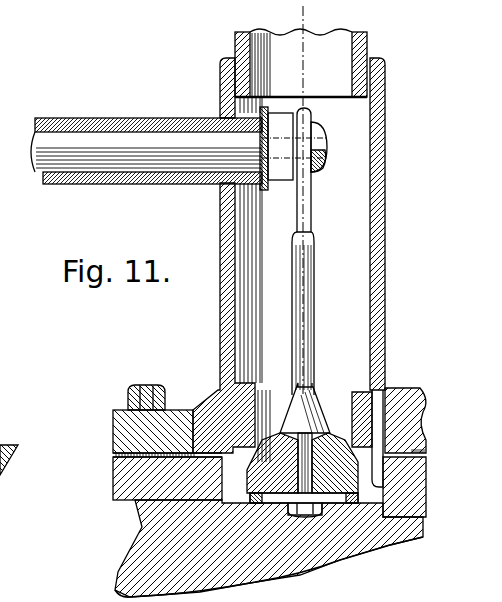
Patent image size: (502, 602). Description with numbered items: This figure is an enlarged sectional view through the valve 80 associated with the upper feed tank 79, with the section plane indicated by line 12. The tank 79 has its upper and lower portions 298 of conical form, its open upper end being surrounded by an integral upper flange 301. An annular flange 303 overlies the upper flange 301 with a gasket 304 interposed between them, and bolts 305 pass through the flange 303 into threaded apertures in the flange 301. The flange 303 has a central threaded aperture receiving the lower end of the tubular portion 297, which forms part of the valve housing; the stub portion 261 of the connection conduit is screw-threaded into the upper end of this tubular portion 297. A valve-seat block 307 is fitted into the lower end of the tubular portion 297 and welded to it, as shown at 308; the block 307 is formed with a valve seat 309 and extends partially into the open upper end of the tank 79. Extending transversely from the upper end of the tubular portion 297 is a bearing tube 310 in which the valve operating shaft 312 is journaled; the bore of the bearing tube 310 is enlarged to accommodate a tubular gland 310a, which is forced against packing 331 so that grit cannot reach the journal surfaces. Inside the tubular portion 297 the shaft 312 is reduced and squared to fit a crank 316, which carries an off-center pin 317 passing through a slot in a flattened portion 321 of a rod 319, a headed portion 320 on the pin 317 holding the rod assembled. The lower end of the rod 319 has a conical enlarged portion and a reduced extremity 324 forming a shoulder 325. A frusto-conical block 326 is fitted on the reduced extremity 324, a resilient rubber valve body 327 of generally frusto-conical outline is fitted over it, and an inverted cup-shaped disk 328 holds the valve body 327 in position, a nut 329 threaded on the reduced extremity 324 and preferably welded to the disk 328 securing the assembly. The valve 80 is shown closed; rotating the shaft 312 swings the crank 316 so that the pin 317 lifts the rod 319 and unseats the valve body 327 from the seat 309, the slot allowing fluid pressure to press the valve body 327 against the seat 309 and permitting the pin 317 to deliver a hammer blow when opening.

The section line 12- 12 is at (302, 16).
The stub portion 261 is at (243, 40).
The tubular portion 297 is at (236, 281).
The valve 80 is at (269, 272).
The weld 308 is at (387, 356).
The valve-seat block 307 is at (384, 405).
The bearing tube 310 is at (141, 106).
The tubular gland 310a is at (110, 173).
The valve operating shaft 312 is at (66, 137).
The packing 331 is at (231, 186).
The crank 316 is at (284, 120).
The flattened portion 321 is at (309, 205).
The off-center pin 317 is at (320, 146).
The headed portion 320 is at (316, 168).
The rod 319 is at (316, 291).
The frusto-conical block 326 is at (274, 394).
The shoulder 325 is at (323, 434).
The reduced extremity 324 is at (290, 484).
The inverted cup-shaped disk 328 is at (348, 505).
The resilient valve body 327 is at (247, 500).
The valve seat 309 is at (359, 494).
The nut 329 is at (305, 514).
The bolts 305 is at (146, 390).
The annular flange 303 is at (114, 431).
The upper flange 301 is at (120, 483).
The upper feed tank 79 is at (121, 557).
The conical portions 298 is at (125, 574).
The gasket 304 is at (9, 401).